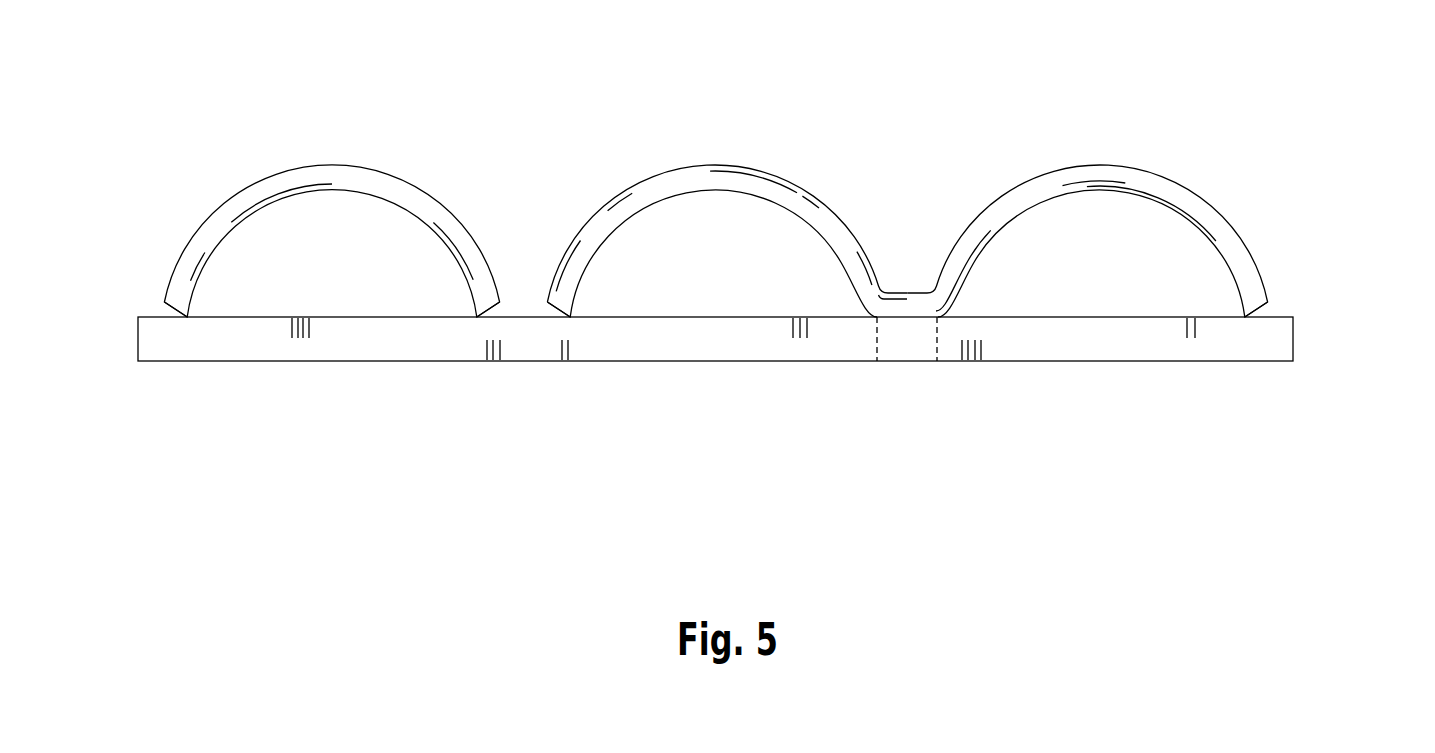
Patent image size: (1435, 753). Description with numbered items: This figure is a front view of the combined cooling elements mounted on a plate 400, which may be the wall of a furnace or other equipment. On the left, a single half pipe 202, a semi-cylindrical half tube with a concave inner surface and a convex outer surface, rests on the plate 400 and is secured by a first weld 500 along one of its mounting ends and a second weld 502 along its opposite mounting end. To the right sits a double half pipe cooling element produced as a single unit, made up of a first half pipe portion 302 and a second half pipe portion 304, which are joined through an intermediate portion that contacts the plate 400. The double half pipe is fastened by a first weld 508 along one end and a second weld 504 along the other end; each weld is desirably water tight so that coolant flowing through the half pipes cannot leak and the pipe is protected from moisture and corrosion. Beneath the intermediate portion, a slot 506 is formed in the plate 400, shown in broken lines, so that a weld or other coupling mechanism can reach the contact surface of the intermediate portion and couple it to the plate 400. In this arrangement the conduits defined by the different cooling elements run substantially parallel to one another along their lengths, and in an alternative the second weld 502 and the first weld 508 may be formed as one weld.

The single half pipe 202 is at (332, 165).
The second half pipe portion 304 is at (717, 165).
The first half pipe portion 302 is at (1102, 165).
The plate 400 is at (220, 345).
The first weld 500 is at (158, 310).
The second weld 502 is at (507, 310).
The second weld 504 is at (1270, 310).
The slot 506 is at (912, 370).
The first weld 508 is at (540, 305).